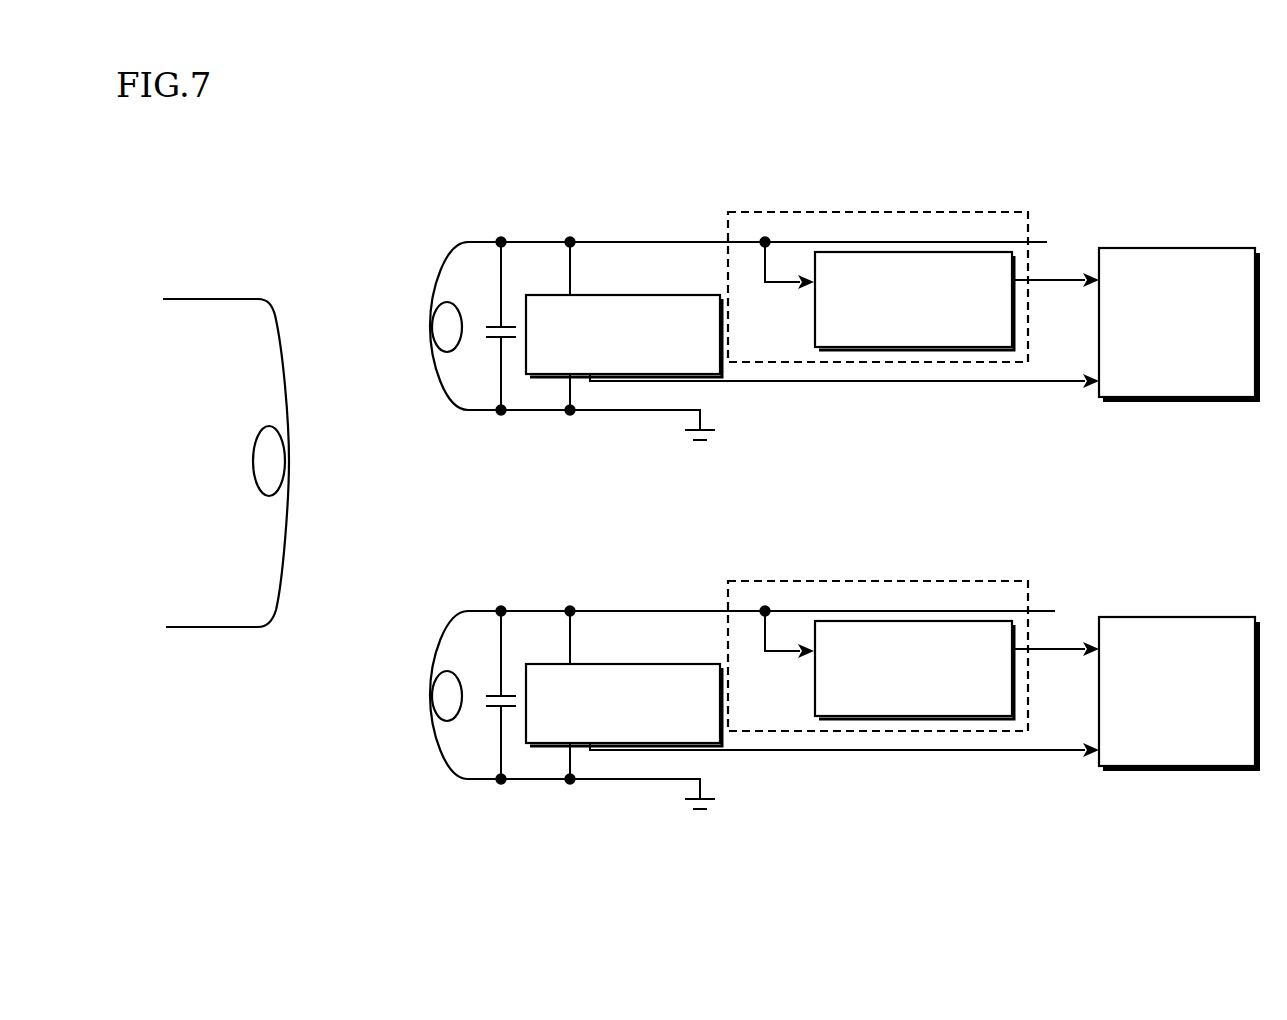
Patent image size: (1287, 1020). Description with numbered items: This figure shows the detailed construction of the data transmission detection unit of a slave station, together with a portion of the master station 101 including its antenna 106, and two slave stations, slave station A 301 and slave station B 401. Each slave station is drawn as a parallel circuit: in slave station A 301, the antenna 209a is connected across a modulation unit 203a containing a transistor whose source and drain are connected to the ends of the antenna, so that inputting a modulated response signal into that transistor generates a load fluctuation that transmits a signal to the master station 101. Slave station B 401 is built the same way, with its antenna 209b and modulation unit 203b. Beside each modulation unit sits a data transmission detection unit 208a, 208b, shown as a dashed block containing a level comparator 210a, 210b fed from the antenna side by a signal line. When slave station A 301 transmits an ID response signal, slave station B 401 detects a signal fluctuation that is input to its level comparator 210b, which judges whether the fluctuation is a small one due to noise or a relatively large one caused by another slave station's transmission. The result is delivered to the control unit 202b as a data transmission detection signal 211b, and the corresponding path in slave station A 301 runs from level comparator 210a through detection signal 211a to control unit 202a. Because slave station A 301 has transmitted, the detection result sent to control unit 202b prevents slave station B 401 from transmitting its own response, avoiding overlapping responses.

The master station 101 is at (192, 265).
The antenna 106 is at (287, 395).
The antenna 209a is at (476, 216).
The antenna 209b is at (465, 636).
The modulation unit 203a is at (555, 294).
The modulation unit 203b is at (614, 681).
The data transmission detection unit 208a is at (770, 212).
The data transmission detection unit 208b is at (878, 626).
The level comparator 210a is at (812, 297).
The level comparator 210b is at (879, 665).
The data transmission detection signal 211a is at (1046, 279).
The data transmission detection signal 211b is at (1072, 609).
The control unit 202a is at (1190, 248).
The control unit 202b is at (1187, 653).
The slave station A 301 is at (912, 172).
The slave station B 401 is at (792, 732).